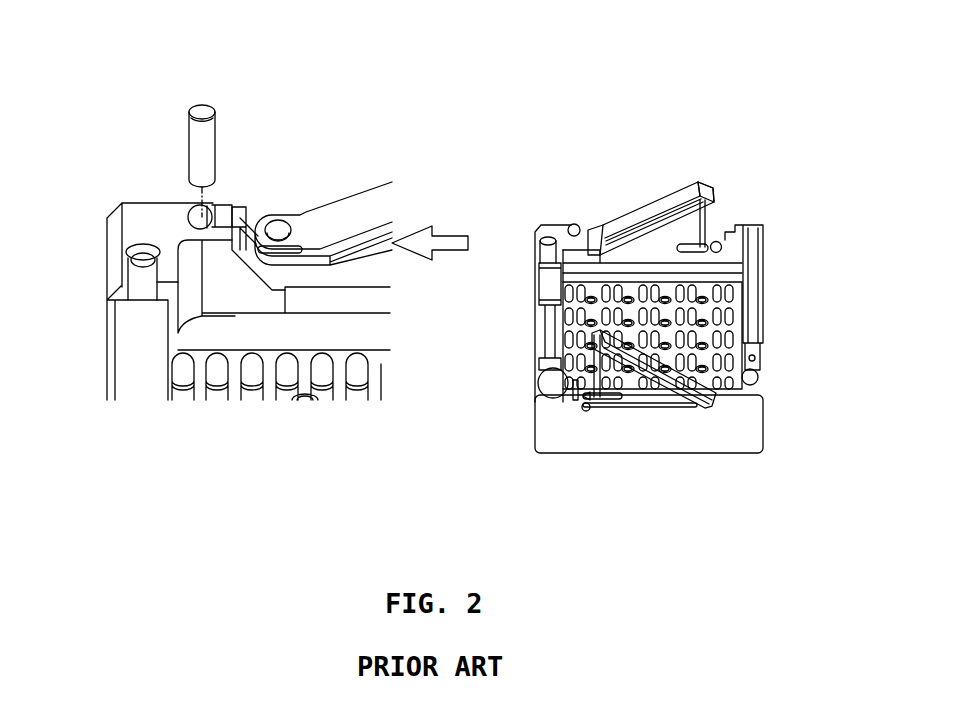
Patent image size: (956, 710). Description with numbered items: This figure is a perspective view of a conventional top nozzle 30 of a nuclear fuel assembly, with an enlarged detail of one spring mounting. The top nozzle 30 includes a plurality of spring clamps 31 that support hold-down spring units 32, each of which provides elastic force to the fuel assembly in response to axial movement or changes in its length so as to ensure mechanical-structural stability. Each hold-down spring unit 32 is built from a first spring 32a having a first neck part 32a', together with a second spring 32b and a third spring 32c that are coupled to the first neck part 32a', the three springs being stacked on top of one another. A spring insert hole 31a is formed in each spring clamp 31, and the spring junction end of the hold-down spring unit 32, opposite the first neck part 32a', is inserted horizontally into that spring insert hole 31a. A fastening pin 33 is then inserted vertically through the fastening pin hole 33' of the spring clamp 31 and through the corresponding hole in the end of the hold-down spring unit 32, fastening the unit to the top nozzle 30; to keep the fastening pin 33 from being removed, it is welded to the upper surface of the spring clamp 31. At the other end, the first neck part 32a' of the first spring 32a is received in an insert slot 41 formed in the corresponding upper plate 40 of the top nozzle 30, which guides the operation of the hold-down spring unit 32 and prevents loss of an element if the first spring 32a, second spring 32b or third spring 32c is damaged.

The top nozzle 30 is at (620, 186).
The spring clamp 31 is at (132, 213).
The spring insert hole 31a is at (240, 242).
The hold-down spring unit 32 is at (358, 194).
The first spring 32a is at (716, 165).
The first neck part 32a' is at (680, 375).
The second spring 32b is at (704, 228).
The third spring 32c is at (708, 193).
The fastening pin 33 is at (213, 120).
The fastening pin hole 33' is at (164, 136).
The upper plate 40 is at (655, 397).
The insert slot 41 is at (690, 252).